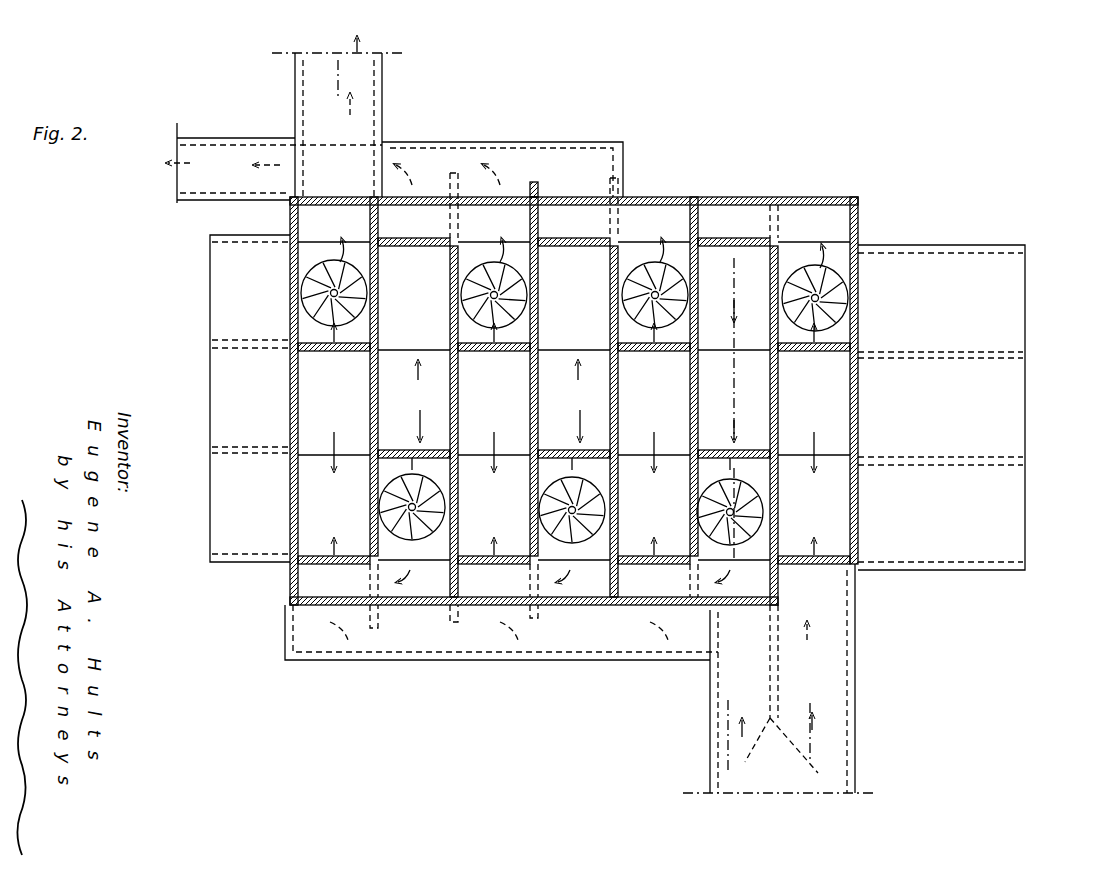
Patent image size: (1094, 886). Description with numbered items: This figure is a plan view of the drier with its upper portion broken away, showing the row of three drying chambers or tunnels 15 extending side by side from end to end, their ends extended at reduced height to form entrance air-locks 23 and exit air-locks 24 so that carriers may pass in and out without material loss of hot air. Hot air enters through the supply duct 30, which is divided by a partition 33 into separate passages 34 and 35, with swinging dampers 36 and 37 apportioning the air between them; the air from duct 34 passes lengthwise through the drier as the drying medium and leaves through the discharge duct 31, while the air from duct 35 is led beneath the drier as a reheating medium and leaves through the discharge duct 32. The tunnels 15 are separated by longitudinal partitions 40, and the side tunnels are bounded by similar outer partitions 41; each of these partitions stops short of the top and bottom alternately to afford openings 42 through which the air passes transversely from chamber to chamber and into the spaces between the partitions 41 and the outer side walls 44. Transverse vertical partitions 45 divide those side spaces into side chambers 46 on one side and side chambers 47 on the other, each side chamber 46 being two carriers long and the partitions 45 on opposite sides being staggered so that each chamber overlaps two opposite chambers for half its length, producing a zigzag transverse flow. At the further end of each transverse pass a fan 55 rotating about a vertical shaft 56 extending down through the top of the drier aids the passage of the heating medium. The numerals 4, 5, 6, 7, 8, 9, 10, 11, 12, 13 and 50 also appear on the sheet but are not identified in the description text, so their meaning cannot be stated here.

The conduit 4 is at (285, 620).
The conduit 5 is at (290, 580).
The conduit 6 is at (240, 502).
The duct 7 is at (813, 197).
The duct 8 is at (735, 197).
The duct 9 is at (657, 197).
The duct 10 is at (575, 160).
The duct 11 is at (495, 160).
The duct 12 is at (415, 160).
The duct 13 is at (327, 700).
The drying chamber 15 is at (238, 240).
The entrance air-lock 23 is at (230, 282).
The exit air-lock 24 is at (1018, 302).
The supply duct 30 is at (780, 782).
The discharge duct 31 is at (295, 108).
The discharge duct 32 is at (193, 143).
The partition 33 is at (775, 655).
The duct 34 is at (830, 690).
The duct 35 is at (730, 682).
The damper 36 is at (782, 728).
The damper 37 is at (762, 722).
The longitudinal partition 40 is at (494, 350).
The outer partition 41 is at (748, 250).
The opening 42 is at (348, 205).
The outer side wall 44 is at (682, 200).
The transverse vertical partition 45 is at (380, 218).
The side chamber 46 is at (316, 600).
The side chamber 47 is at (292, 218).
The compartment 50 is at (455, 268).
The fan 55 is at (310, 312).
The vertical shaft 56 is at (330, 292).